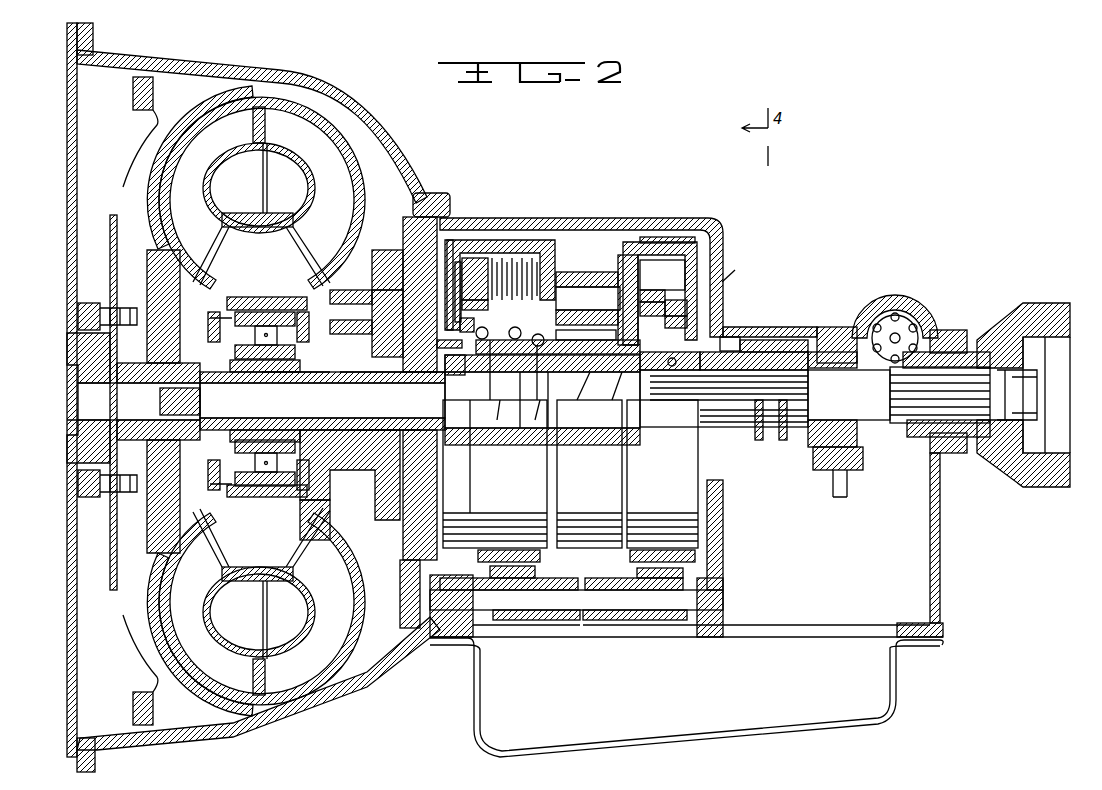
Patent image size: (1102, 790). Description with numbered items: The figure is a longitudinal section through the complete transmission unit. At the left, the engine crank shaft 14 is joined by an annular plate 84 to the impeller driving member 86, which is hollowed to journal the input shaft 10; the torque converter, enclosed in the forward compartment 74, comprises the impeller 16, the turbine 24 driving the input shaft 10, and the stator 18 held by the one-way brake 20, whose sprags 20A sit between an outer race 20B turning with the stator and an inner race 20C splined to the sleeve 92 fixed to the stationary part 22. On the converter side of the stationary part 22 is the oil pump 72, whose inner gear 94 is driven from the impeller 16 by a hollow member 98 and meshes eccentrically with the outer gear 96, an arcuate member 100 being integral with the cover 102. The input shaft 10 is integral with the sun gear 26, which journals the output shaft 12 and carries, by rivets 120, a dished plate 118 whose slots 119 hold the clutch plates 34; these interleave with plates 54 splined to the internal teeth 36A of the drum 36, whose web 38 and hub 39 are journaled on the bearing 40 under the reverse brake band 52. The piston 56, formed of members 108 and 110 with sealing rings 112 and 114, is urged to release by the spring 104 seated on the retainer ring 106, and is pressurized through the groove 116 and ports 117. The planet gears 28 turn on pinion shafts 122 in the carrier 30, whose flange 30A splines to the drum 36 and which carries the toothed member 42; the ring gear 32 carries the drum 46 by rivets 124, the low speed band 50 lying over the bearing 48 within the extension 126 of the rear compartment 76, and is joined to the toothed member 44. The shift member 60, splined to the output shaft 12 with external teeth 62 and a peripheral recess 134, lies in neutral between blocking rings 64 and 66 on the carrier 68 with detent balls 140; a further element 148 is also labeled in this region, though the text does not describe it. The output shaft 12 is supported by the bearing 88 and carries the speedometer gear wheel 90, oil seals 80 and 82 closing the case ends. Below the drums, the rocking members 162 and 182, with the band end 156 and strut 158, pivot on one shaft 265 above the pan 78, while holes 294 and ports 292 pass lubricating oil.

The transmission input shaft 10 is at (340, 398).
The transmission output shaft 12 is at (859, 404).
The engine crank shaft 14 is at (68, 360).
The pump member or impeller 16 is at (348, 190).
The stator 18 is at (279, 273).
The one-way brake 20 is at (236, 342).
The sprags 20A is at (270, 322).
The outer race 20B is at (252, 310).
The inner race 20C is at (266, 425).
The stationary part 22 is at (424, 377).
The turbine portion 24 is at (205, 171).
The sun gear 26 is at (578, 396).
The planet gears 28 is at (575, 272).
The planet carrier 30 is at (645, 275).
The radial flange portion 30A is at (622, 260).
The ring gear 32 is at (628, 245).
The clutch plates 34 is at (530, 334).
The drum 36 is at (568, 230).
The internal spline teeth 36A is at (486, 240).
The radial supporting web 38 is at (408, 245).
The hub portion 39 is at (536, 382).
The bearing 40 is at (462, 375).
The internal toothed member 42 is at (612, 396).
The internal toothed member 44 is at (737, 347).
The drum 46 is at (715, 250).
The bearing 48 is at (685, 300).
The low speed brake band 50 is at (668, 240).
The reverse brake band 52 is at (515, 258).
The clutch plates 54 is at (525, 262).
The piston 56 is at (390, 250).
The shift member 60 is at (760, 355).
The external teeth 62 is at (660, 372).
The synchronizing blocking ring 64 is at (660, 300).
The synchronizing blocking ring 66 is at (715, 340).
The sleeve-shaped carrier 68 is at (700, 372).
The oil pump 72 is at (360, 292).
The forward compartment 74 is at (324, 74).
The rear compartment 76 is at (830, 326).
The pan 78 is at (880, 704).
The oil seal 80 is at (330, 468).
The oil seal 82 is at (962, 352).
The annular plate 84 is at (112, 290).
The impeller driving member 86 is at (196, 118).
The bearing 88 is at (862, 450).
The gear wheel 90 is at (918, 322).
The sleeve 92 is at (305, 375).
The inner externally toothed gear 94 is at (400, 428).
The outer internally toothed gear 96 is at (378, 290).
The hollow member 98 is at (362, 375).
The arcuate member 100 is at (350, 330).
The cover 102 is at (348, 497).
The coiled spring 104 is at (498, 328).
The retainer ring 106 is at (550, 380).
The piston member 108 is at (475, 258).
The piston member 110 is at (457, 262).
The hydraulic sealing ring 112 is at (449, 240).
The hydraulic sealing ring 114 is at (490, 400).
The circular groove 116 is at (456, 358).
The ports 117 is at (440, 342).
The dished plate 118 is at (584, 298).
The spline type slots 119 is at (478, 317).
The rivets 120 is at (586, 346).
The pinion shafts 122 is at (598, 310).
The rivets 124 is at (652, 296).
The ring-shaped extension 126 is at (743, 272).
The peripheral recess 134 is at (770, 440).
The balls 140 is at (676, 370).
The ring 148 is at (696, 322).
The free end of brake band 156 is at (545, 556).
The strut 158 is at (540, 572).
The rocking member 162 is at (549, 622).
The rocking member 182 is at (650, 622).
The shaft 265 is at (648, 606).
The ports 292 is at (536, 419).
The holes 294 is at (497, 419).